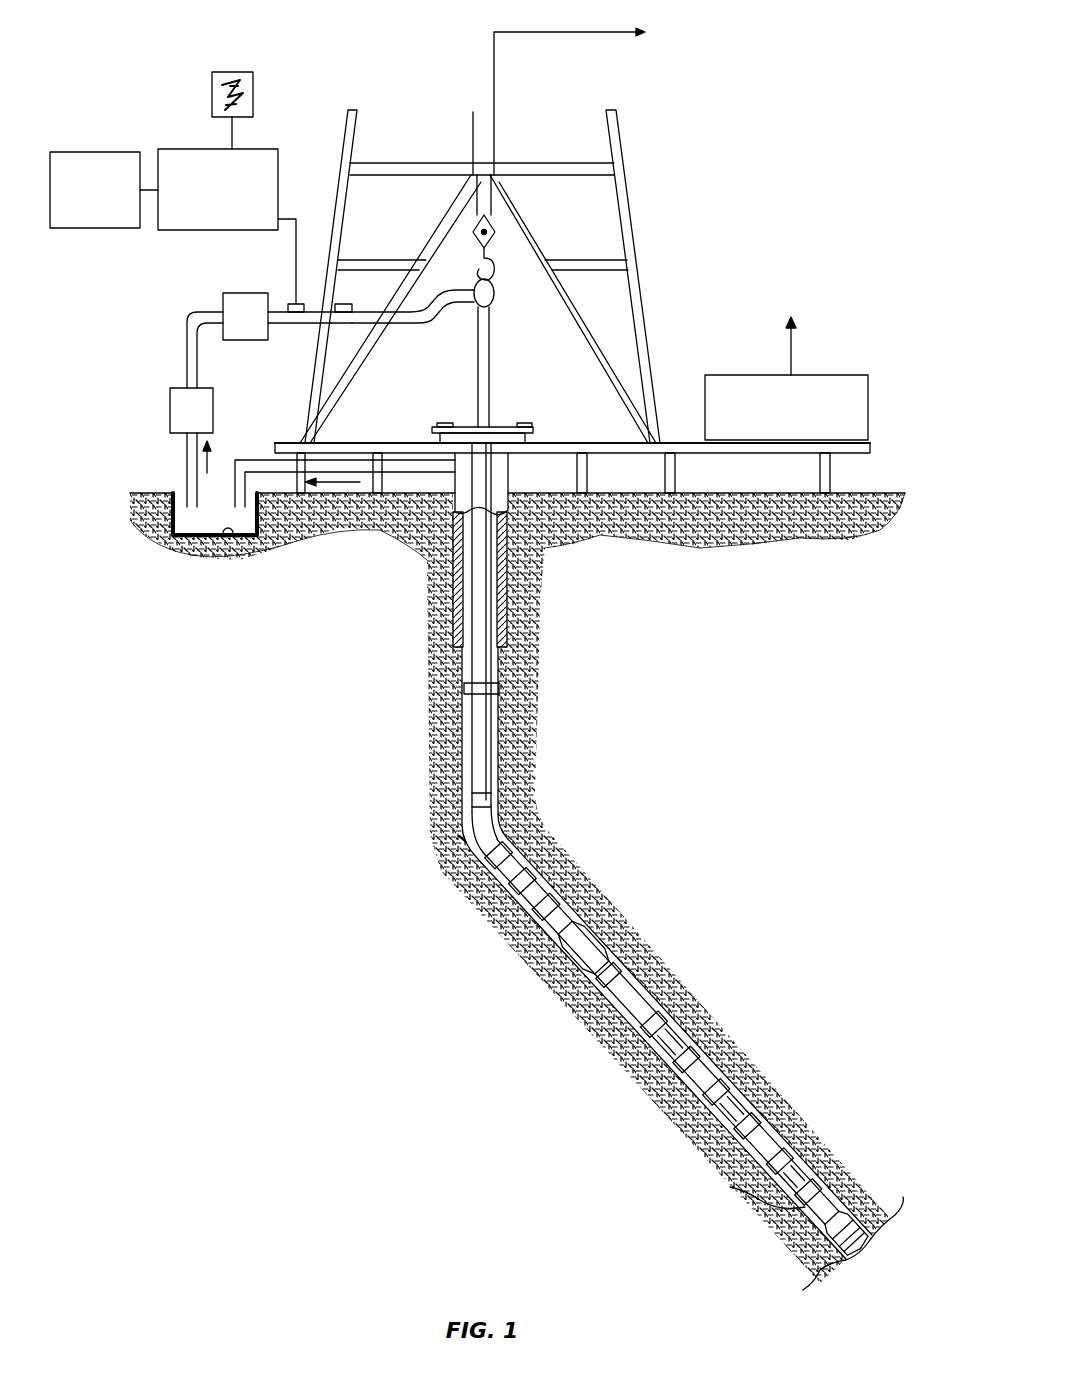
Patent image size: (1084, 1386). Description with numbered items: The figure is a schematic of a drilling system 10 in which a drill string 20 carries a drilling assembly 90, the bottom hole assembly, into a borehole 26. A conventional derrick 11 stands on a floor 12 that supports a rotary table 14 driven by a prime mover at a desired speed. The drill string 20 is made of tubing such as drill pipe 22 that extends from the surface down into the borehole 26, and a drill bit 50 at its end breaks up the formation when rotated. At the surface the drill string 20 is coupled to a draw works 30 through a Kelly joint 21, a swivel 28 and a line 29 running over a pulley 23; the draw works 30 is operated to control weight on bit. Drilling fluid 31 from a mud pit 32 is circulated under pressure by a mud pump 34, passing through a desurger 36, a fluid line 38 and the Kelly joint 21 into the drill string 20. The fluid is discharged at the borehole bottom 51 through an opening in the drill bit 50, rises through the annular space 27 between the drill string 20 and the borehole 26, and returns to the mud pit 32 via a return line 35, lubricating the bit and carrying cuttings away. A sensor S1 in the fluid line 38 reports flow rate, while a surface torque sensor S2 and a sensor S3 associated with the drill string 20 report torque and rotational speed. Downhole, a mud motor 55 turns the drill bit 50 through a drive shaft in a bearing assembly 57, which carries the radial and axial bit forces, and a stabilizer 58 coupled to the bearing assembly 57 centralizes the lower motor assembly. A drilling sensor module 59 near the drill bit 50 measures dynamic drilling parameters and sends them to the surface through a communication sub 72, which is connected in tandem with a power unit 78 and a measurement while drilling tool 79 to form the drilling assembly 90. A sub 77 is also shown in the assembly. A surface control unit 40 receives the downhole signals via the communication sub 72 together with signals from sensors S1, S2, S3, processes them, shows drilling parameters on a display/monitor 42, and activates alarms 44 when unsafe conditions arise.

The drilling system 10 is at (380, 50).
The derrick 11 is at (647, 282).
The floor 12 is at (672, 443).
The rotary table 14 is at (497, 422).
The drill string 20 is at (497, 745).
The Kelly joint 21 is at (490, 335).
The drill pipe 22 is at (460, 727).
The pulley 23 is at (492, 230).
The borehole 26 is at (513, 816).
The annular space 27 is at (516, 858).
The swivel 28 is at (461, 318).
The line 29 is at (495, 102).
The draw works 30 is at (818, 375).
The drilling fluid 31 is at (198, 522).
The mud pit 32 is at (232, 535).
The mud pump 34 is at (178, 388).
The return line 35 is at (420, 475).
The desurger 36 is at (245, 293).
The fluid line 38 is at (302, 323).
The surface control unit 40 is at (192, 149).
The display/monitor 42 is at (233, 72).
The alarms 44 is at (108, 152).
The drill bit 50 is at (874, 1201).
The borehole bottom 51 is at (816, 1290).
The down hole motor 55 is at (698, 1046).
The bearing assembly 57 is at (816, 1144).
The stabilizer 58 is at (838, 1163).
The drilling sensor module 59 is at (780, 1198).
The communication sub 72 is at (463, 838).
The downhole sub 77 is at (566, 969).
The power unit 78 is at (493, 883).
The measurement while drilling tool 79 is at (512, 908).
The drilling assembly 90 is at (636, 914).
The sensor S1 is at (345, 304).
The surface torque sensor S2 is at (525, 423).
The sensor S3 is at (445, 423).